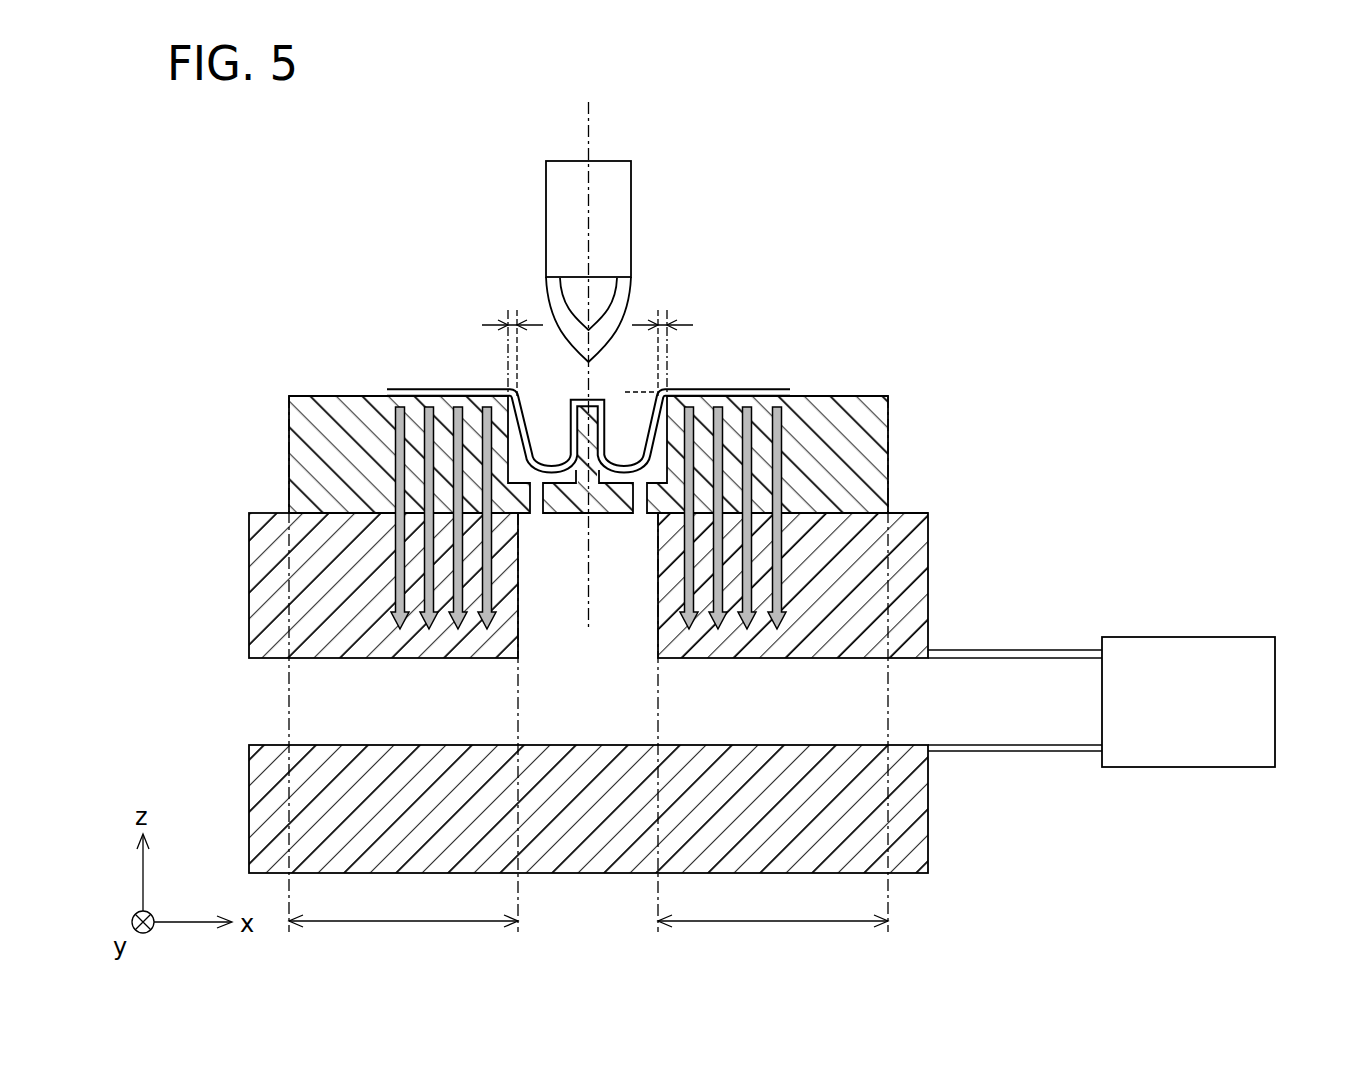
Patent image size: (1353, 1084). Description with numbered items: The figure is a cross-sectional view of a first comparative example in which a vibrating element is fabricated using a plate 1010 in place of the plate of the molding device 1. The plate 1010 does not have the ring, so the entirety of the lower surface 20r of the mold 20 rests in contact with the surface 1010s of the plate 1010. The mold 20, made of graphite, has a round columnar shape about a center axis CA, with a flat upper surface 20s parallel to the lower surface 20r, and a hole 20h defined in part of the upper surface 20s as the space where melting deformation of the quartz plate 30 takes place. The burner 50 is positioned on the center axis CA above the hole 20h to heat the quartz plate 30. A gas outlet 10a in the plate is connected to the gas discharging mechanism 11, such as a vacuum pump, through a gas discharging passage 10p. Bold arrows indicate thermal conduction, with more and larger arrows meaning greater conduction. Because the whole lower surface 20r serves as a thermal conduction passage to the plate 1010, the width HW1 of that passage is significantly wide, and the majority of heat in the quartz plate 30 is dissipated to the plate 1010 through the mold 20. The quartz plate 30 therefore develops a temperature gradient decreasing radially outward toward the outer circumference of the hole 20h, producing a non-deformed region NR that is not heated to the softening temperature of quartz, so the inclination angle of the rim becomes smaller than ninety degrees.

The molding device 1 is at (914, 97).
The mold 20 is at (858, 418).
The upper surface 20s is at (322, 395).
The lower surface 20r is at (808, 522).
The hole 20h is at (545, 432).
The quartz plate 30 is at (413, 389).
The burner 50 is at (555, 192).
The center axis CA is at (585, 113).
The non-deformed region NR is at (512, 318).
The plate 1010 is at (905, 577).
The surface 1010s is at (897, 505).
The gas discharging passage 10p is at (897, 745).
The gas outlet 10a is at (601, 548).
The gas discharging mechanism 11 is at (1240, 655).
The width of the thermal conduction passage HW1 is at (588, 681).